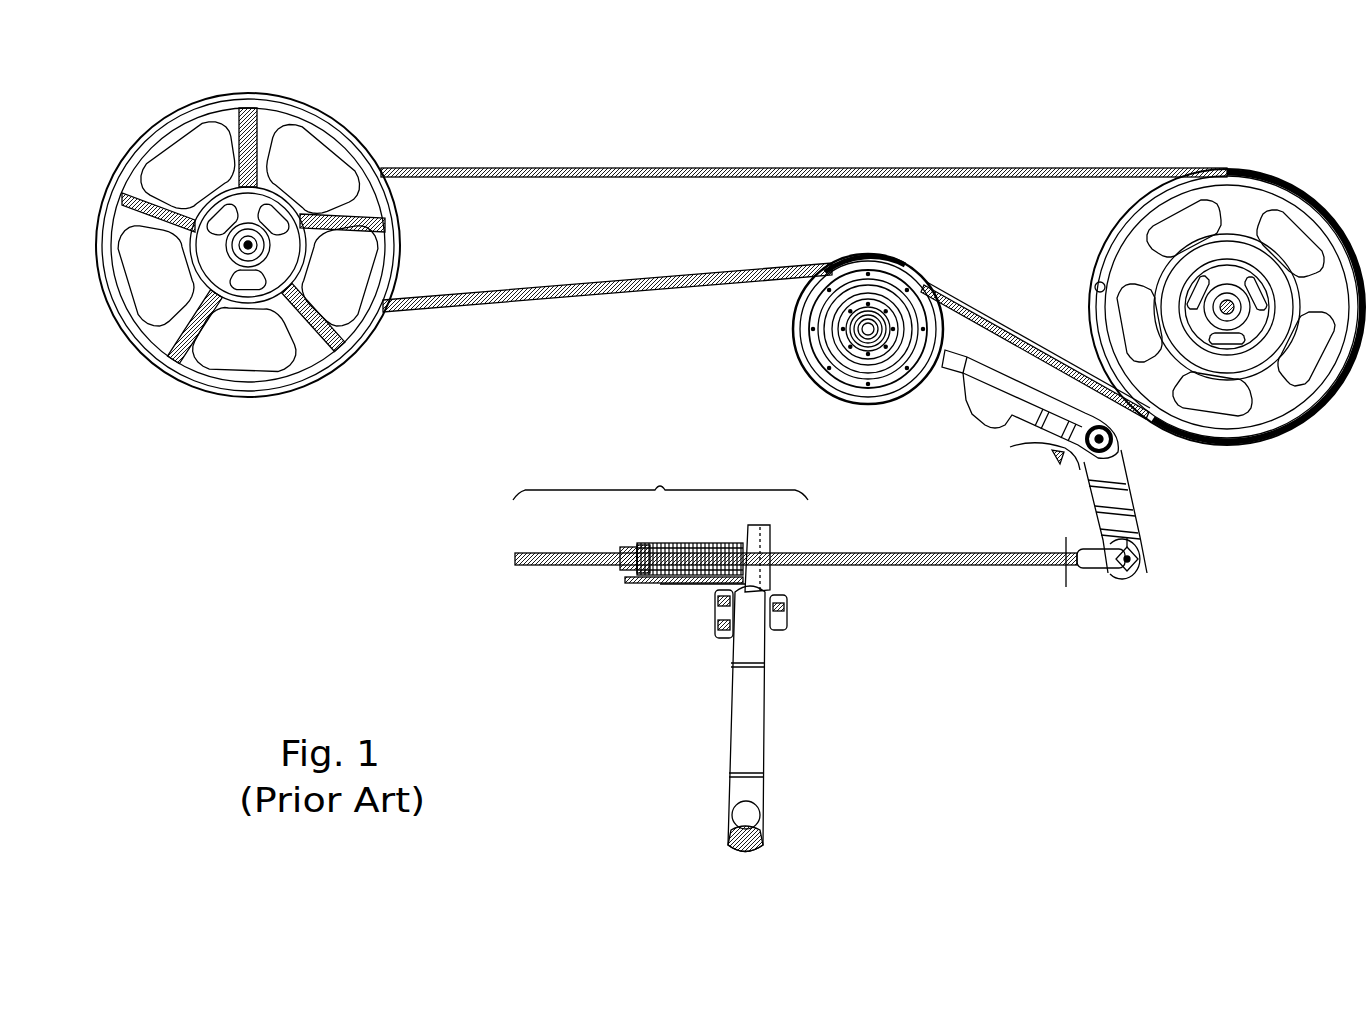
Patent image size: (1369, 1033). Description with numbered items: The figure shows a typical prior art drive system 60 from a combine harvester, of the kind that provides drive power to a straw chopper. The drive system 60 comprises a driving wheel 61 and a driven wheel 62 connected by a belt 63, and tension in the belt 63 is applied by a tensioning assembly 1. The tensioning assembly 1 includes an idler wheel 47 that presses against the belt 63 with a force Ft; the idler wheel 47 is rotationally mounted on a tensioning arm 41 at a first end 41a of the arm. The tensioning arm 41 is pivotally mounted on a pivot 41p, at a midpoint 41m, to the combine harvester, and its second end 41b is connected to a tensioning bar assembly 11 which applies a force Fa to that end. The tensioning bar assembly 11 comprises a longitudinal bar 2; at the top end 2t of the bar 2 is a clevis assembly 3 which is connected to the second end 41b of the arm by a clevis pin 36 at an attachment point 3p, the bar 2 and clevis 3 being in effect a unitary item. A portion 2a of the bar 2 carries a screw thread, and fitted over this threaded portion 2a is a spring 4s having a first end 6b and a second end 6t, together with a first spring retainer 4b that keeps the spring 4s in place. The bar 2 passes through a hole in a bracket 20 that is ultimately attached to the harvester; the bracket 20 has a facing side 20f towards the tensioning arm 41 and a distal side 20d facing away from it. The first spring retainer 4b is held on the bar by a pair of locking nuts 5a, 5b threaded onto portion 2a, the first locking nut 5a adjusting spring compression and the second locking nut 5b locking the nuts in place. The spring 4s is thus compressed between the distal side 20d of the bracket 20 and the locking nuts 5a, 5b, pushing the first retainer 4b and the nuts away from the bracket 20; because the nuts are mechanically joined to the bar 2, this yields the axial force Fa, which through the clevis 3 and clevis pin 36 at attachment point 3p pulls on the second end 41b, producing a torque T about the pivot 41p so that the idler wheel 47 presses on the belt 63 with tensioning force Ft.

The tensioning assembly 1 is at (1150, 726).
The longitudinal bar 2 is at (910, 568).
The threaded portion of the bar 2a is at (660, 474).
The top end of the bar 2t is at (1090, 580).
The clevis assembly 3 is at (1112, 577).
The attachment point 3p is at (1147, 568).
The first spring retainer 4b is at (623, 570).
The spring 4s is at (680, 583).
The first locking nut 5a is at (633, 545).
The second locking nut 5b is at (630, 545).
The first end of the spring 6b is at (635, 580).
The second end of the spring 6t is at (715, 593).
The tensioning bar assembly 11 is at (850, 585).
The bracket 20 is at (783, 612).
The distal side of bracket 20d is at (757, 528).
The facing side of bracket 20f is at (770, 530).
The clevis pin 36 is at (1137, 577).
The tensioning arm 41 is at (1118, 502).
The first end of the tensioning arm 41a is at (950, 272).
The second end of the tensioning arm 41b is at (1143, 560).
The midpoint of the tensioning arm 41m is at (1046, 448).
The pivot 41p is at (1145, 448).
The idler wheel 47 is at (830, 263).
The drive system 60 is at (403, 470).
The driving wheel 61 is at (1187, 186).
The driven wheel 62 is at (333, 138).
The belt 63 is at (757, 168).